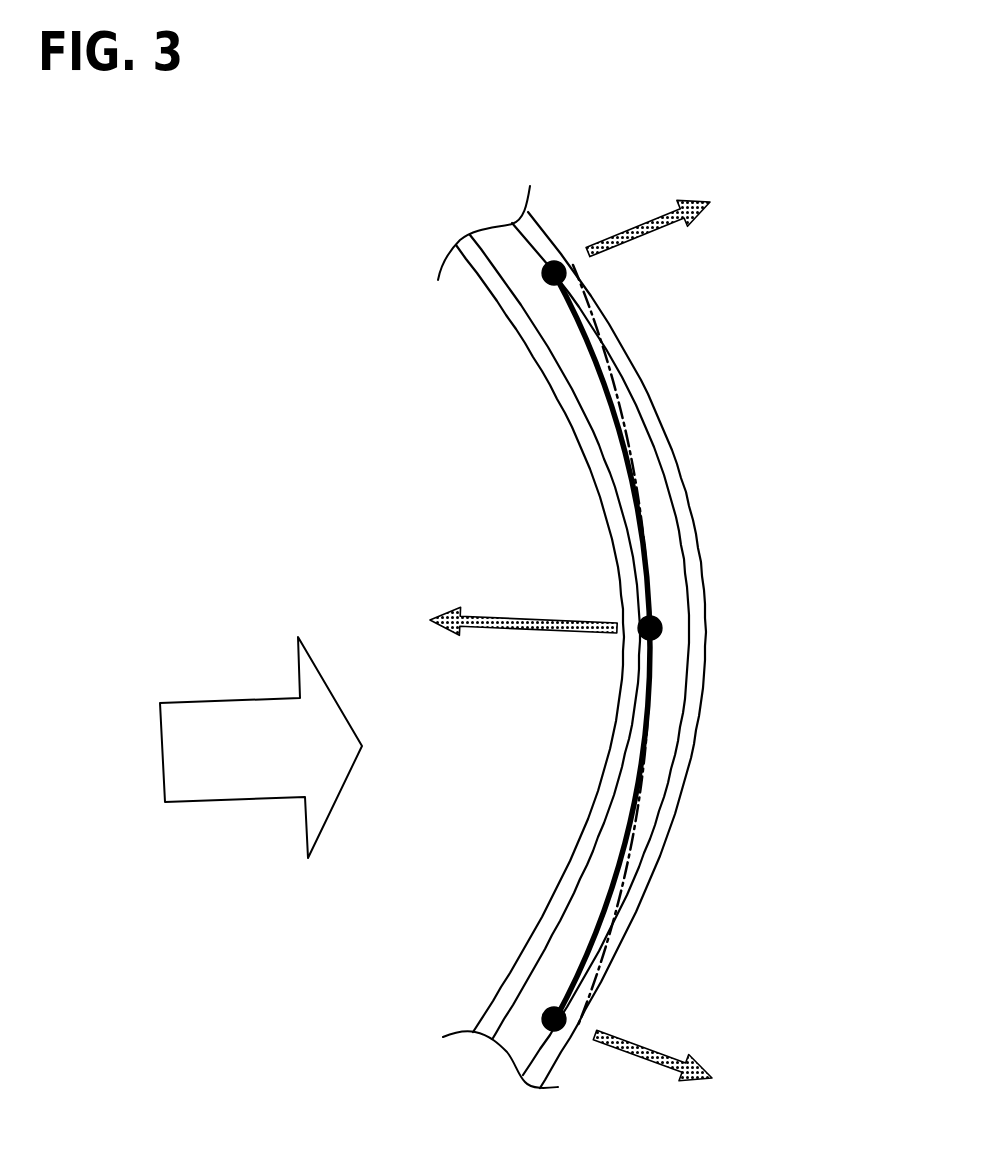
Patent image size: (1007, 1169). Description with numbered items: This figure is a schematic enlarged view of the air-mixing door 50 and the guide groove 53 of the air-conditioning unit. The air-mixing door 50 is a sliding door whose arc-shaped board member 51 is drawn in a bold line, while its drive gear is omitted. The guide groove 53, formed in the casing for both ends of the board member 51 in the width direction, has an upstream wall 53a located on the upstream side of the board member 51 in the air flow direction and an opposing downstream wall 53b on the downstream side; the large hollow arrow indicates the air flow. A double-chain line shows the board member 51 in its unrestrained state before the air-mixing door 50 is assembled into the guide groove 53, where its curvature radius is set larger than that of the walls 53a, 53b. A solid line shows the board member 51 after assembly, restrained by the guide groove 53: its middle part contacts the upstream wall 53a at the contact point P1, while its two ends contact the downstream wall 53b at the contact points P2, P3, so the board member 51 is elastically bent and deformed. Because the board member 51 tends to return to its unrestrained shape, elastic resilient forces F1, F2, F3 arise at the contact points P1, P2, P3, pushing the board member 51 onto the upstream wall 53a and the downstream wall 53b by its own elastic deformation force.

The air-mixing door 50 is at (595, 373).
The board member 51 is at (595, 373).
The guide groove 53 is at (513, 637).
The upstream wall 53a is at (603, 488).
The downstream wall 53b is at (682, 518).
The contact point P1 is at (660, 626).
The contact point P2 is at (555, 265).
The contact point P3 is at (556, 1029).
The elastic resilient force F1 is at (515, 633).
The elastic resilient force F2 is at (651, 233).
The elastic resilient force F3 is at (645, 1046).